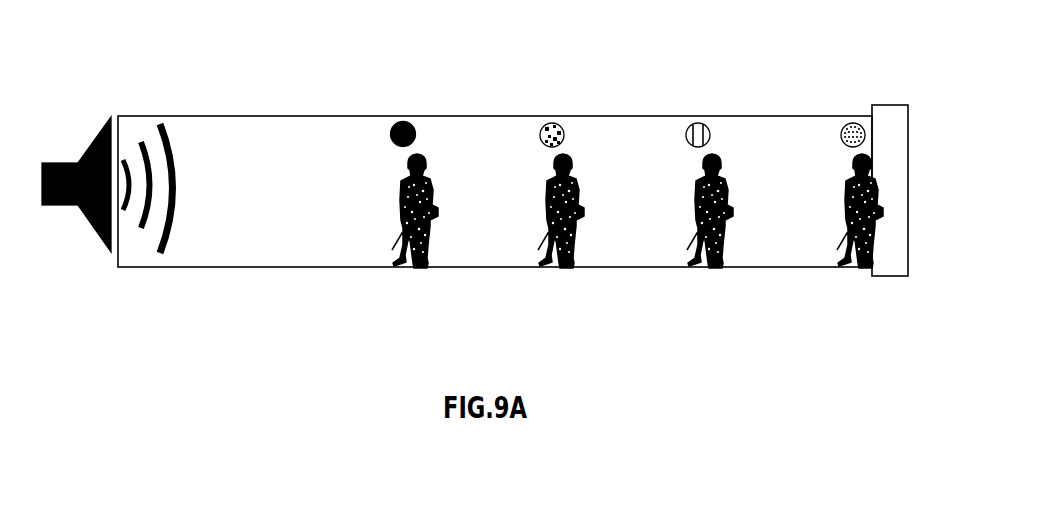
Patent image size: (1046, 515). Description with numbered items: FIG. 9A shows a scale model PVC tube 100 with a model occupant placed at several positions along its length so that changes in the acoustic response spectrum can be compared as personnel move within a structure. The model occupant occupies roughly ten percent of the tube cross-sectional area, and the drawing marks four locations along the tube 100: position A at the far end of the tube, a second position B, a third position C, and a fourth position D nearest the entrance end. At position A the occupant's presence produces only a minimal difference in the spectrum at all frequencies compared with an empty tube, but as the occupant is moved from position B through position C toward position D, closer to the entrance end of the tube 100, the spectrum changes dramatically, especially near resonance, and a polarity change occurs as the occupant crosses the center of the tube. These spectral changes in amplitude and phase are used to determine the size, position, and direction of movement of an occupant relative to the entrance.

The tube 100 is at (755, 115).
The position A is at (849, 120).
The position B is at (693, 118).
The position C is at (545, 118).
The position D is at (397, 118).